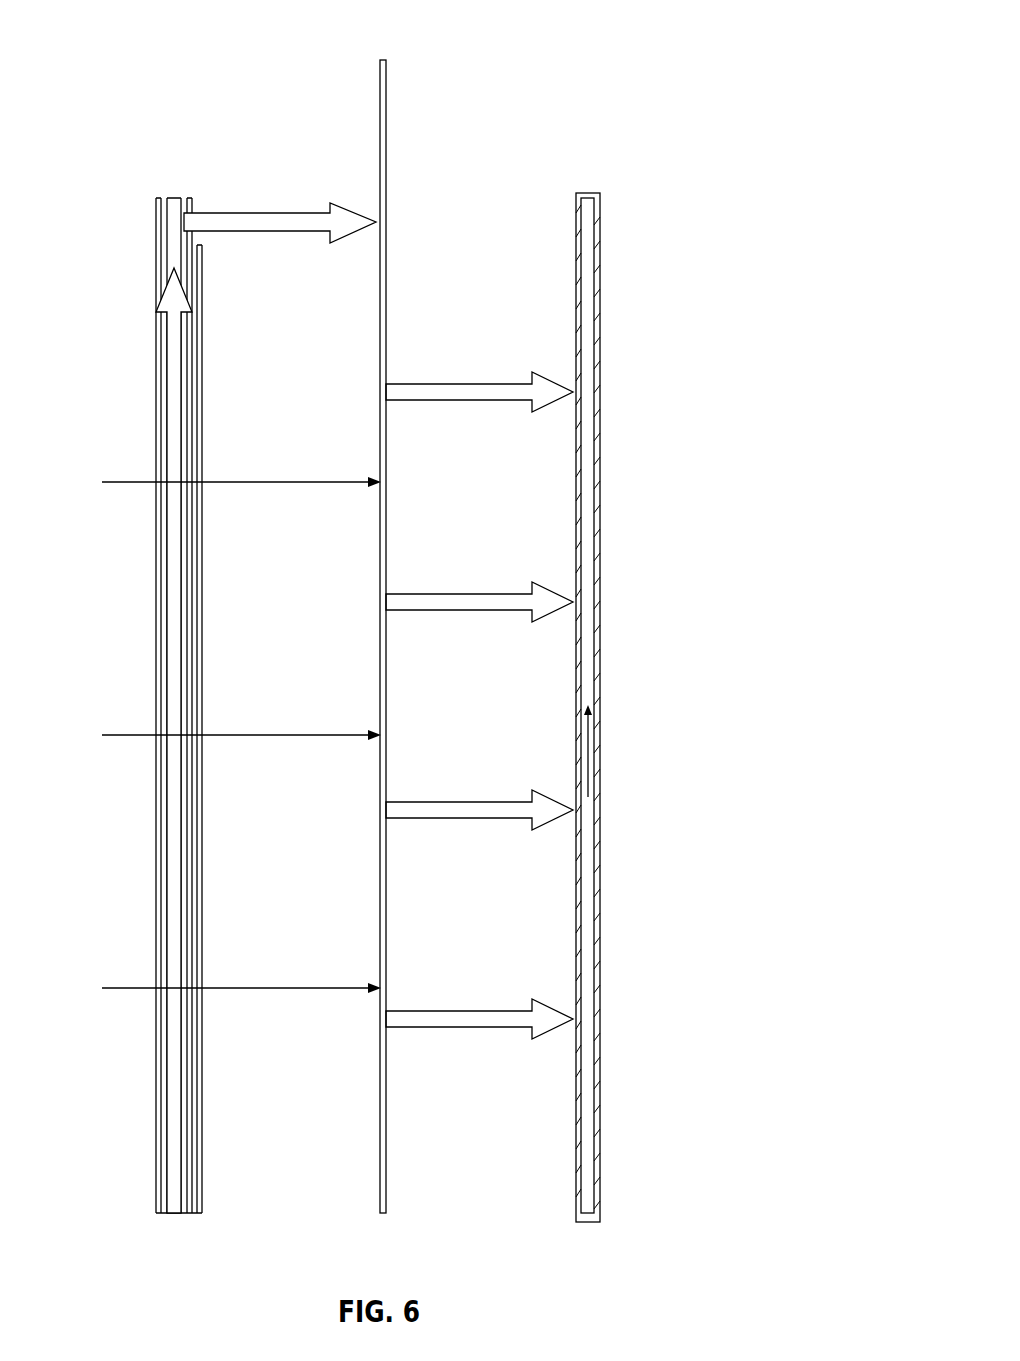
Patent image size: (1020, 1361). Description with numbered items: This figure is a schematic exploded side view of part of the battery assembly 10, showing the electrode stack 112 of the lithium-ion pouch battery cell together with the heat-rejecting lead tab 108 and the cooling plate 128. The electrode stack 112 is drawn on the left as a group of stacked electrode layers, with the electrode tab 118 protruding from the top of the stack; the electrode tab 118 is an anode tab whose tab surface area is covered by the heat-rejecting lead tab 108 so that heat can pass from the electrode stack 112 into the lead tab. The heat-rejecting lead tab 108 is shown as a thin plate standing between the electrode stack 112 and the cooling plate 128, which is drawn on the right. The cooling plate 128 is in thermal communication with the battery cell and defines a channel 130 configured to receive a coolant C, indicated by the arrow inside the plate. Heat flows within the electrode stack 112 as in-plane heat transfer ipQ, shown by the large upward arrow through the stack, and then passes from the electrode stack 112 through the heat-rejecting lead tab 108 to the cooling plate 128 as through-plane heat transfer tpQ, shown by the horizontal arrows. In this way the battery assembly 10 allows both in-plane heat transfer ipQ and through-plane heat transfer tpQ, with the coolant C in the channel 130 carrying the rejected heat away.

The battery assembly 10 is at (654, 27).
The electrode stack 112 is at (106, 400).
The electrode tab 118 is at (157, 200).
The heat-rejecting lead tab 108 is at (386, 212).
The cooling plate 128 is at (600, 225).
The channel 130 is at (580, 450).
The coolant C is at (592, 768).
The through-plane heat transfer tpQ is at (291, 482).
The in-plane heat transfer ipQ is at (172, 1213).